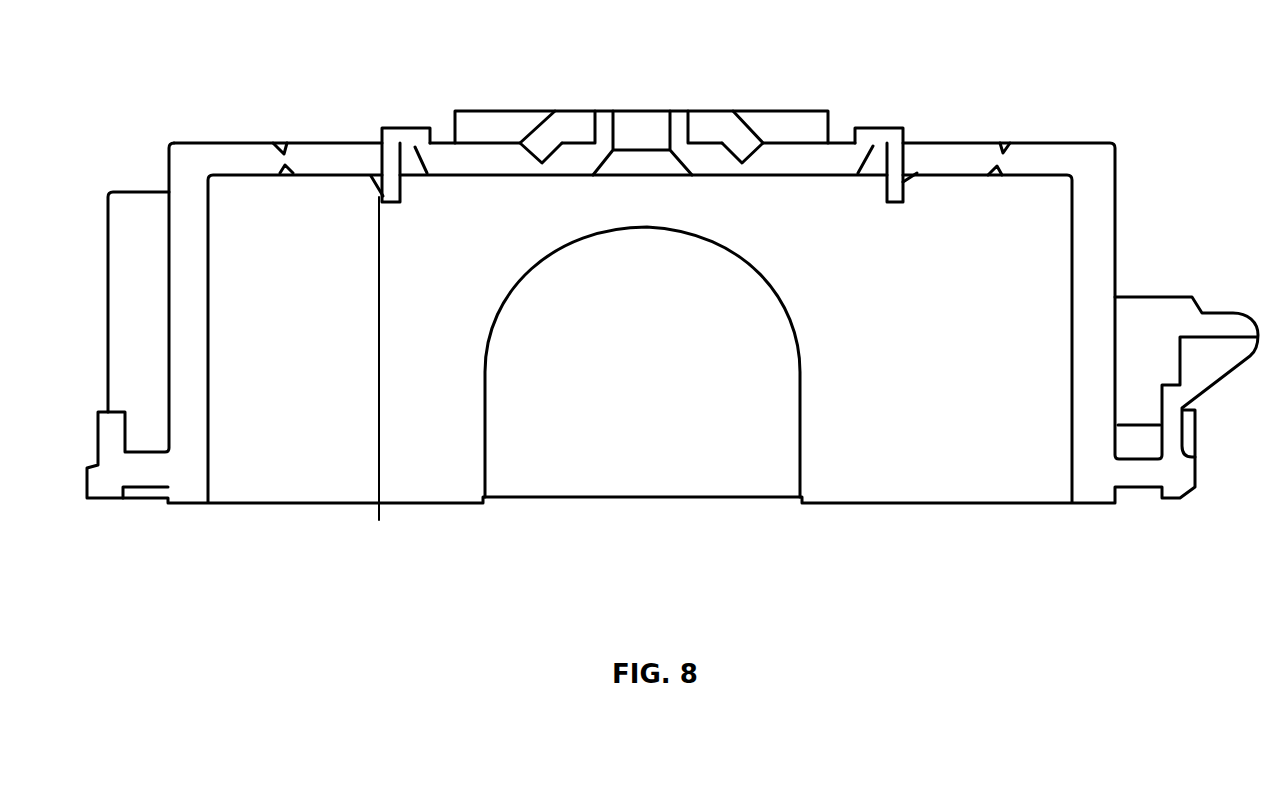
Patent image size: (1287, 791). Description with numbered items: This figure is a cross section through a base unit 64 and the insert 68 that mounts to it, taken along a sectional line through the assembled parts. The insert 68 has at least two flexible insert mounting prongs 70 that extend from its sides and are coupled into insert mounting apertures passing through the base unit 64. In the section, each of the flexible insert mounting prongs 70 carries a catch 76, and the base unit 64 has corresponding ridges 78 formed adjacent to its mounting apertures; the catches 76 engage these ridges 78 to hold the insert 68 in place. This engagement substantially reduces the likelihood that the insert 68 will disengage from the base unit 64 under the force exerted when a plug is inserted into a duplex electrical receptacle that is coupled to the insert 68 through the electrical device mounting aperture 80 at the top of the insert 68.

The base unit 64 is at (183, 482).
The insert 68 is at (838, 155).
The flexible insert mounting prongs 70 is at (397, 128).
The catches 76 is at (378, 381).
The ridges 78 is at (377, 173).
The electrical device mounting aperture 80 is at (637, 118).